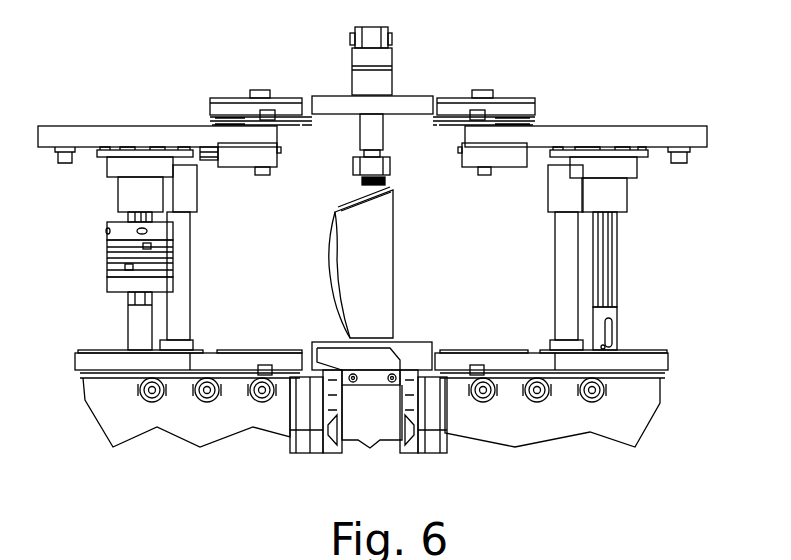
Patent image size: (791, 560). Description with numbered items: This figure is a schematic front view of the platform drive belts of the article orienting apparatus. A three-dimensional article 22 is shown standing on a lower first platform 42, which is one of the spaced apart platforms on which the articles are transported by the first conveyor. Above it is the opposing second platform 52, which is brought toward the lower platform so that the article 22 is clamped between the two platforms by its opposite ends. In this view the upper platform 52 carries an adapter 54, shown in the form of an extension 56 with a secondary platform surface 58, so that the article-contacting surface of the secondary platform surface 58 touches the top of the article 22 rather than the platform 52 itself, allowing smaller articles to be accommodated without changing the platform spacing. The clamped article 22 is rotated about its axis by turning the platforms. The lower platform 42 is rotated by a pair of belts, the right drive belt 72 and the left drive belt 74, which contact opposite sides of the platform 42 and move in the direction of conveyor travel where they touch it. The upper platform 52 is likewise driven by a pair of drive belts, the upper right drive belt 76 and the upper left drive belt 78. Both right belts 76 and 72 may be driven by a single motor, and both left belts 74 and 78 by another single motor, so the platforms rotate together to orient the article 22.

The article 22 is at (358, 308).
The first platform 42 is at (408, 352).
The second platform 52 is at (395, 105).
The adapter 54 is at (408, 138).
The extension 56 is at (367, 140).
The secondary platform surface 58 is at (380, 165).
The right drive belt 72 is at (520, 358).
The left drive belt 74 is at (247, 360).
The upper right drive belt 76 is at (520, 108).
The upper left drive belt 78 is at (245, 104).